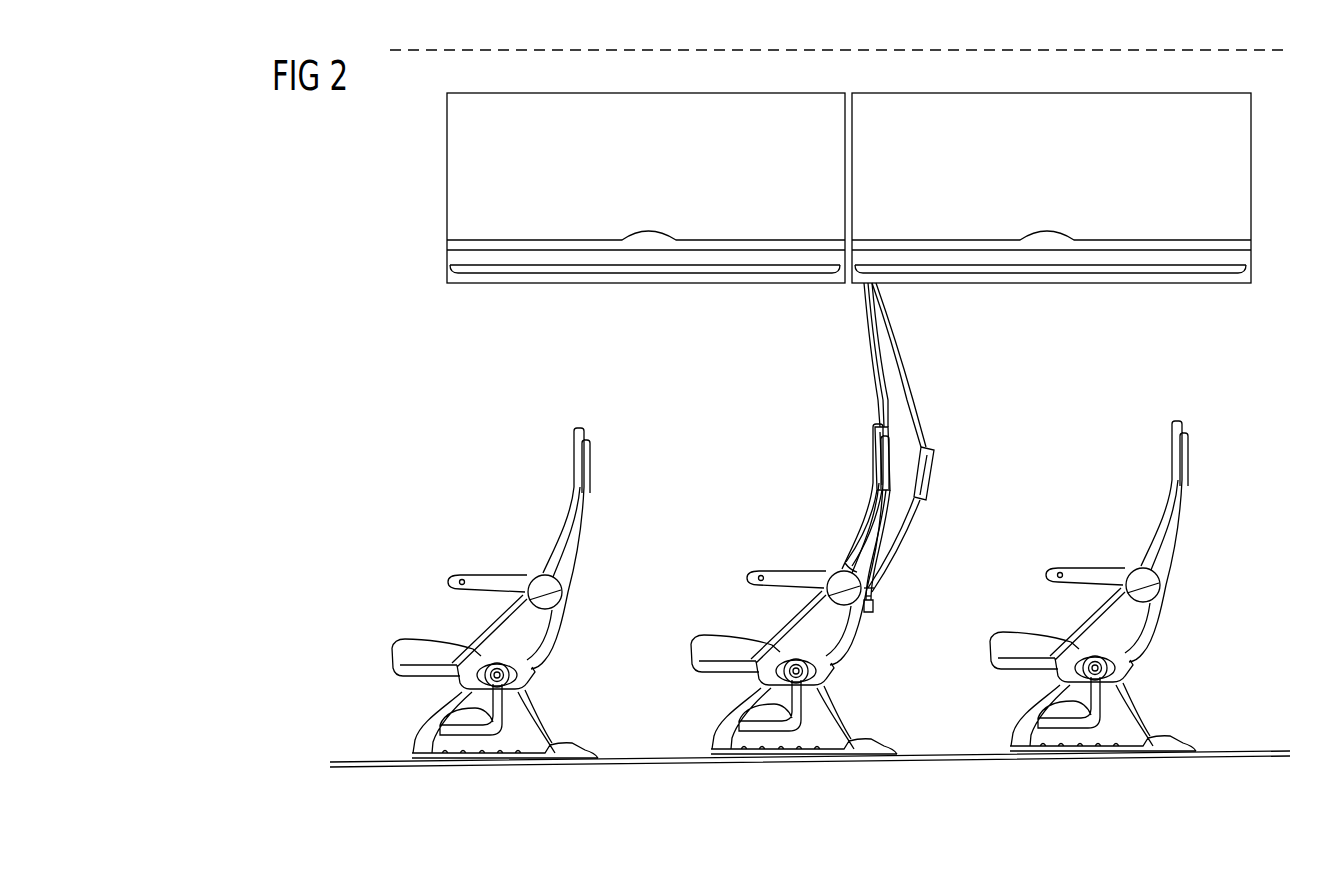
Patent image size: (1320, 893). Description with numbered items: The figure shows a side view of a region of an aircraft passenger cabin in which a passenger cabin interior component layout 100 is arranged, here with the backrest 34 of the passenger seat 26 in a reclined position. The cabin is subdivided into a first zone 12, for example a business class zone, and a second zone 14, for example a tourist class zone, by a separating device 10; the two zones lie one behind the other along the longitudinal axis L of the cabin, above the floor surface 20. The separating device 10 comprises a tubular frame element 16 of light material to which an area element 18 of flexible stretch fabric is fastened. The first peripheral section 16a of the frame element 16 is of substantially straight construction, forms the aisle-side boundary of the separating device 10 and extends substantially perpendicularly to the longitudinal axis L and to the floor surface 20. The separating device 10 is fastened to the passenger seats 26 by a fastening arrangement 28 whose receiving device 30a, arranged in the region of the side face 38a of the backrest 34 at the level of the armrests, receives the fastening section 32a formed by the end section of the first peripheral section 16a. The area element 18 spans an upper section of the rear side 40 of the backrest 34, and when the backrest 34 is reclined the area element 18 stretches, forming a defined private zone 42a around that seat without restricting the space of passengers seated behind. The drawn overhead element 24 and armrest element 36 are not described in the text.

The longitudinal axis L is at (1257, 50).
The overhead storage compartment 24 is at (1242, 182).
The floor surface 20 is at (1227, 750).
The first zone 12 is at (648, 366).
The second zone 14 is at (1131, 366).
The passenger cabin interior component layout 100 is at (838, 518).
The separating device 10 is at (887, 467).
The frame element 16 is at (863, 467).
The first peripheral section 16a is at (875, 415).
The area element 18 is at (925, 448).
The private zone 42a is at (922, 440).
The backrest 34 is at (856, 528).
The side face 38a is at (847, 563).
The rear side 40 is at (916, 512).
The fastening section 32a is at (878, 595).
The fastening arrangement 28 is at (918, 602).
The receiving device 30a is at (874, 613).
The passenger seat 26 is at (823, 544).
The armrest 36 is at (769, 561).